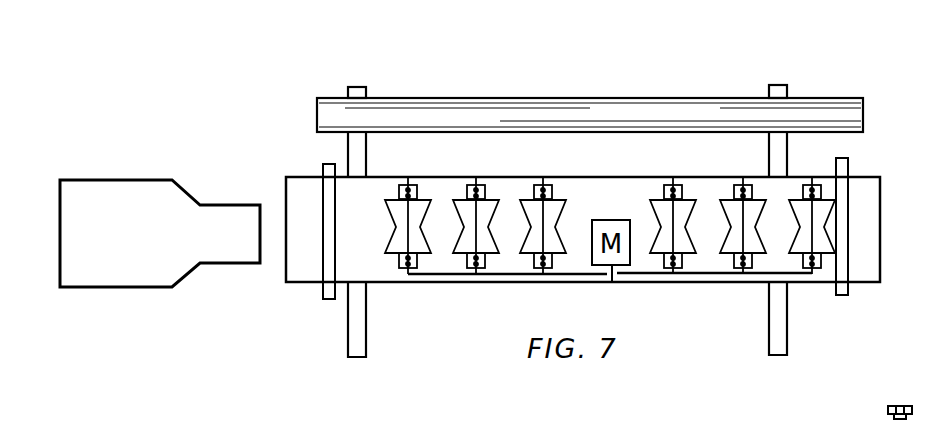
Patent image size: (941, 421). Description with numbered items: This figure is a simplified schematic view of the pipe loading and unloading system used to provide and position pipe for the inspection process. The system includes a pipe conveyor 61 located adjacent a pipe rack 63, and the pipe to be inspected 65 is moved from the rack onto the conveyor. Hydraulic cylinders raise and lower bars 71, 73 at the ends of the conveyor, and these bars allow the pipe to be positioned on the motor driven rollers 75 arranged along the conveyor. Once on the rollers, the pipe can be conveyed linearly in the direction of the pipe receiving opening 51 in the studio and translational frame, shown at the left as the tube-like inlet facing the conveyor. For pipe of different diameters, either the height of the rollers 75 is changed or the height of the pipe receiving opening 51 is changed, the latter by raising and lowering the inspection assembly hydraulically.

The pipe receiving opening 51 is at (259, 244).
The pipe conveyor 61 is at (858, 213).
The pipe rack 63 is at (777, 92).
The pipe to be inspected 65 is at (525, 112).
The bar 71 is at (331, 292).
The bar 73 is at (842, 291).
The motor driven rollers 75 is at (399, 237).